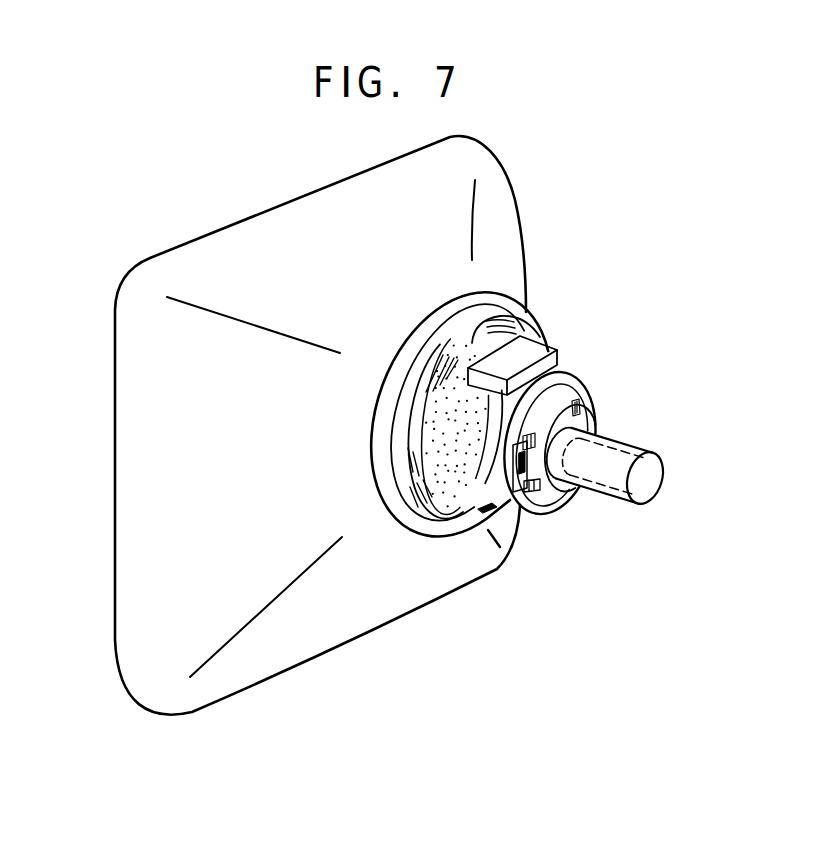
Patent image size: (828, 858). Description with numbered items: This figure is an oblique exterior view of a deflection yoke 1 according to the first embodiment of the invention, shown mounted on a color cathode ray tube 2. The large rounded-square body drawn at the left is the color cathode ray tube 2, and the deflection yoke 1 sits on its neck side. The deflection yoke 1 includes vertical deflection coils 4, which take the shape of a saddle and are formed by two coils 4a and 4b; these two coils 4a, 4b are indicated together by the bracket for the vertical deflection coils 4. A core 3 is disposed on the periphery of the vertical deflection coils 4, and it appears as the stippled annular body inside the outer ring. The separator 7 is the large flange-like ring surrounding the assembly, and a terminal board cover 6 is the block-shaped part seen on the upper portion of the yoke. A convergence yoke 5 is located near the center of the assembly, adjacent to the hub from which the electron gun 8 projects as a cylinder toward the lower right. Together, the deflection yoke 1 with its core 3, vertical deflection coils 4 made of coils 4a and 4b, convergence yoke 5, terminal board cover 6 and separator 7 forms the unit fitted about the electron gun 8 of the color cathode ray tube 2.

The deflection yoke 1 is at (565, 505).
The color cathode ray tube 2 is at (297, 218).
The core 3 is at (457, 480).
The vertical deflection coils 4 is at (647, 208).
The coil 4a is at (528, 322).
The coil 4b is at (492, 306).
The convergence yoke 5 is at (527, 510).
The terminal board cover 6 is at (532, 330).
The separator 7 is at (527, 268).
The electron gun 8 is at (613, 457).